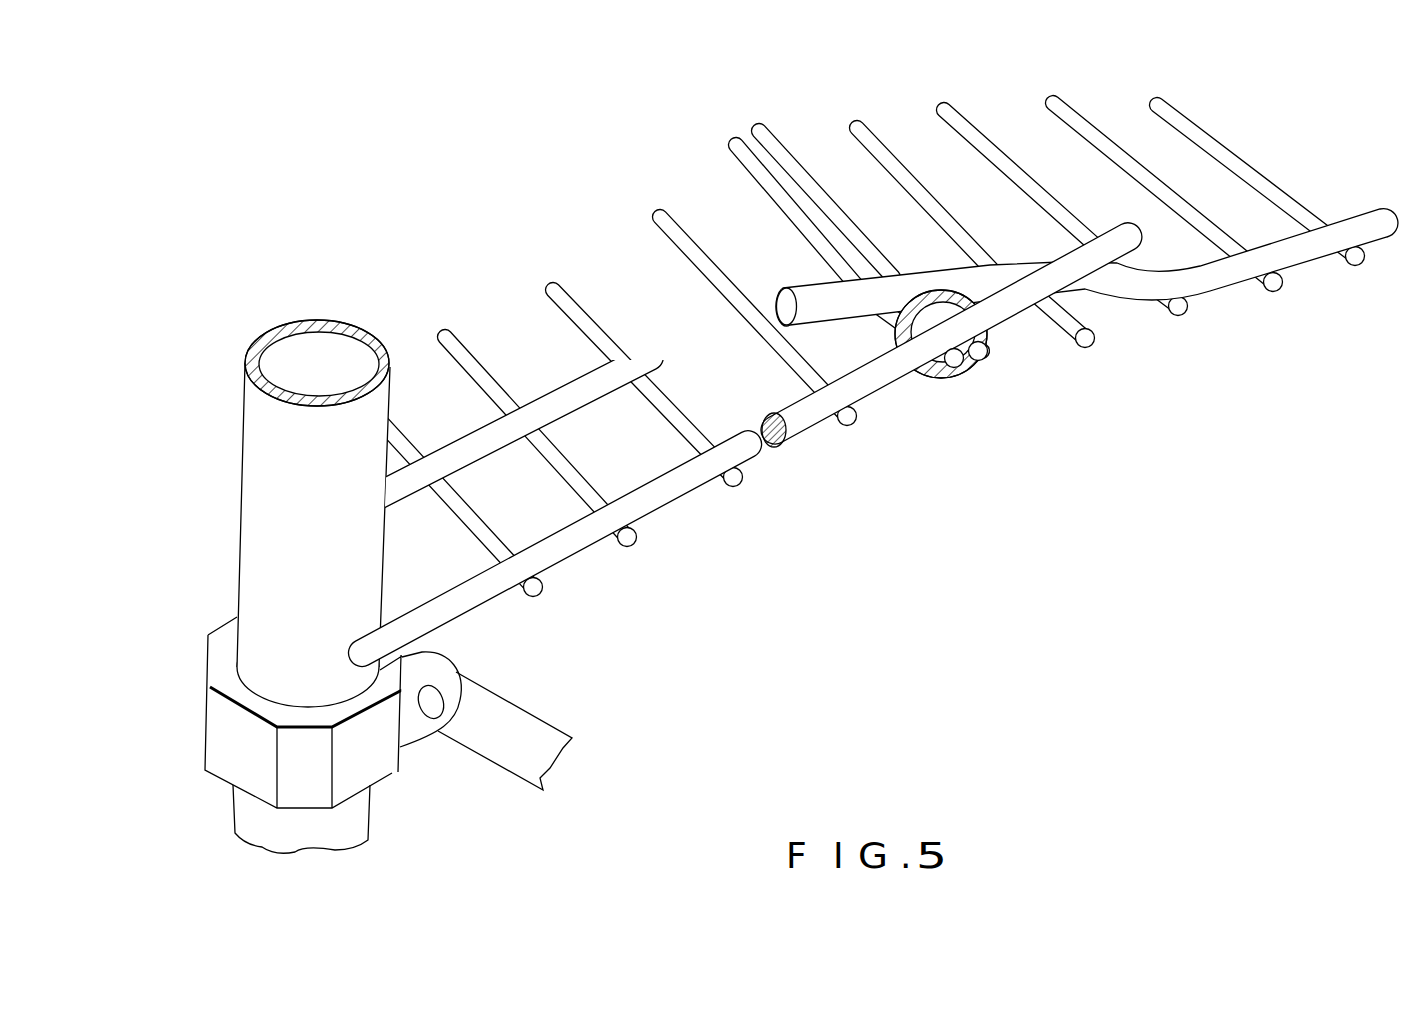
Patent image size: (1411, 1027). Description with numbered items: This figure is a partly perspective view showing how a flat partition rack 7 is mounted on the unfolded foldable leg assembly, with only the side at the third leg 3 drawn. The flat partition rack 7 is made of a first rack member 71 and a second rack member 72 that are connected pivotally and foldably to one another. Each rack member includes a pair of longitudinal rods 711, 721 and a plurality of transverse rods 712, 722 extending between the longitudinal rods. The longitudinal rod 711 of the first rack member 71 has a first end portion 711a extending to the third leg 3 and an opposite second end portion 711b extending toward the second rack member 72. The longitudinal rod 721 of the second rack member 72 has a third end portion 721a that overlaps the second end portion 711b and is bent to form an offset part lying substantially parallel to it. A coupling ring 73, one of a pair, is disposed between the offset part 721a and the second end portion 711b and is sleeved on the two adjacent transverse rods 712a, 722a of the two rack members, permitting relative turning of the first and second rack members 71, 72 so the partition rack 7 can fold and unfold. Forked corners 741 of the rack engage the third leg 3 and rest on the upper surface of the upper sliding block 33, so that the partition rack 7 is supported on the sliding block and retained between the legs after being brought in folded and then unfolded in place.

The third leg 3 is at (268, 498).
The upper sliding block 33 is at (223, 668).
The flat partition rack 7 is at (878, 337).
The first rack member 71 is at (752, 397).
The longitudinal rod 711 is at (808, 412).
The first end portion 711a is at (490, 582).
The second end portion 711b is at (953, 328).
The transverse rod 712 is at (473, 365).
The transverse rod 712a is at (765, 178).
The second rack member 72 is at (1073, 221).
The longitudinal rod 721 is at (1087, 194).
The third end portion 721a is at (840, 297).
The transverse rod 722 is at (873, 143).
The transverse rod 722a is at (779, 142).
The coupling ring 73 is at (988, 295).
The forked corner 741 is at (403, 490).